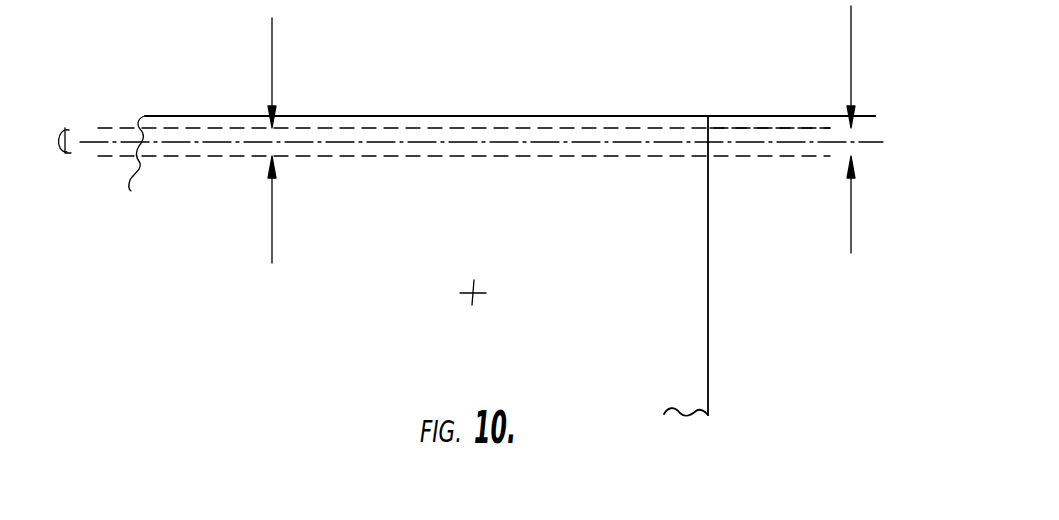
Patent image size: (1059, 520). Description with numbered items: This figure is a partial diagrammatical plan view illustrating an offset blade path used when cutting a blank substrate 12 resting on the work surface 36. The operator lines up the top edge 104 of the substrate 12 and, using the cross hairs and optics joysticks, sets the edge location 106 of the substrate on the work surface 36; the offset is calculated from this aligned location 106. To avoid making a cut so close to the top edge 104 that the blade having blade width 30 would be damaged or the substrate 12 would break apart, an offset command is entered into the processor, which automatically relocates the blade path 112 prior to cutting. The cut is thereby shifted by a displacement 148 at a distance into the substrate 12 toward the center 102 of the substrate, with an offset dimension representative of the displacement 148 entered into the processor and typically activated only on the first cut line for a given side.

The substrate 12 is at (679, 342).
The blade width 30 is at (272, 190).
The work surface 36 is at (769, 366).
The center of the substrate 102 is at (470, 297).
The top edge 104 is at (428, 116).
The substrate top edge coordinate location 106 is at (708, 116).
The blade path 112 is at (740, 157).
The displacement 148 is at (866, 132).